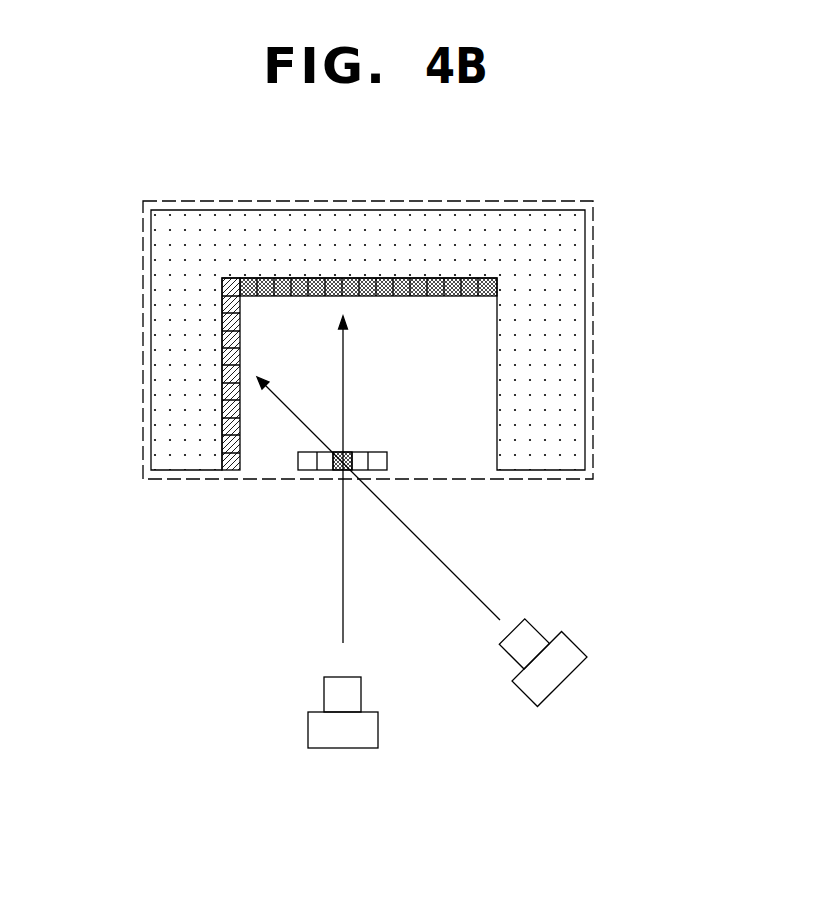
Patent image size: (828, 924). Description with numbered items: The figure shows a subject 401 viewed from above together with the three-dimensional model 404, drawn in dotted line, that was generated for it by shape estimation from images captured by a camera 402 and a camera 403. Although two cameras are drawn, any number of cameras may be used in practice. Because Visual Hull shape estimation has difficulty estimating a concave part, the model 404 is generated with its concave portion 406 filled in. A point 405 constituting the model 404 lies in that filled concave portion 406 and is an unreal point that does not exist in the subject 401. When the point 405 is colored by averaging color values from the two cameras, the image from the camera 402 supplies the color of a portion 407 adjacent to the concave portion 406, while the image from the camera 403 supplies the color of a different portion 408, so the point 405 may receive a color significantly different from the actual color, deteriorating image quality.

The subject 401 is at (572, 413).
The camera 402 is at (308, 717).
The camera 403 is at (568, 682).
The three-dimensional model 404 is at (198, 200).
The point 405 is at (338, 471).
The concave portion 406 is at (463, 453).
The portion 407 is at (455, 283).
The portion 408 is at (230, 373).